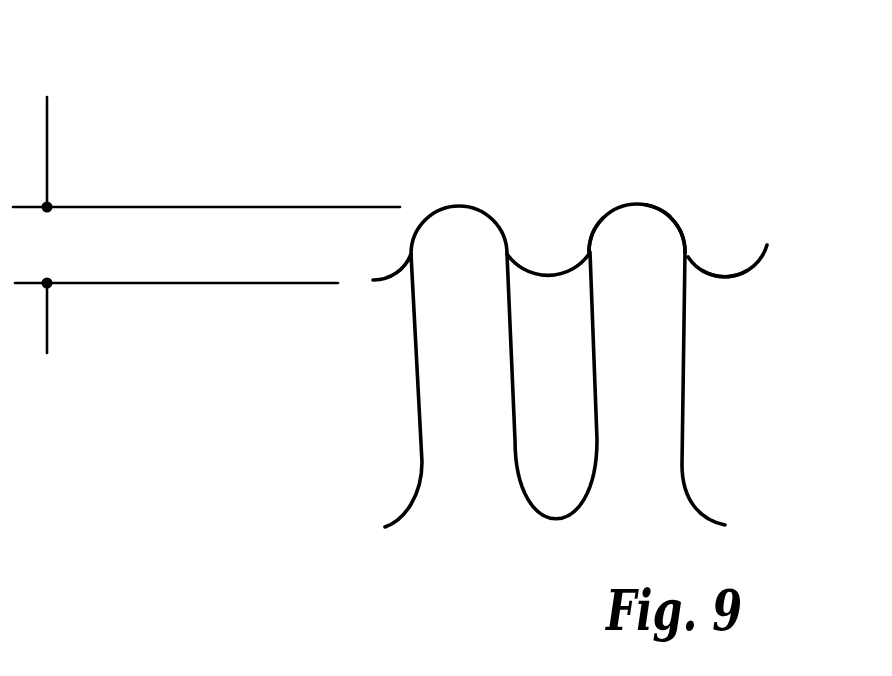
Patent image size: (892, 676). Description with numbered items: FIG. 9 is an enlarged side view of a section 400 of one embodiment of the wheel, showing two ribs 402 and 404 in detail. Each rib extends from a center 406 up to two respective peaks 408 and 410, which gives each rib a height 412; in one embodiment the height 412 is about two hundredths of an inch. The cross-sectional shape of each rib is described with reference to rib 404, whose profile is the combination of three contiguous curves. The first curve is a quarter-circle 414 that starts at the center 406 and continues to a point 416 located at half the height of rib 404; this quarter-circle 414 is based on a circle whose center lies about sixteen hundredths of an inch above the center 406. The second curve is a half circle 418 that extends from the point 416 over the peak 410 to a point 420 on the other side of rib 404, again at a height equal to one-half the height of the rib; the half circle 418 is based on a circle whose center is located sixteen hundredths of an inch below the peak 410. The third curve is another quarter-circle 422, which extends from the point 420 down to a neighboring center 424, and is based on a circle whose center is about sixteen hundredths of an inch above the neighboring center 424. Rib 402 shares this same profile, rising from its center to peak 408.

The section 400 is at (778, 97).
The rib 402 is at (453, 387).
The rib 404 is at (653, 422).
The center 406 is at (538, 274).
The peak 408 is at (454, 206).
The peak 410 is at (641, 204).
The height 412 is at (206, 208).
The quarter-circle 414 is at (576, 271).
The point 416 is at (589, 243).
The half circle 418 is at (658, 206).
The point 420 is at (684, 233).
The quarter-circle 422 is at (697, 260).
The neighboring center 424 is at (723, 278).